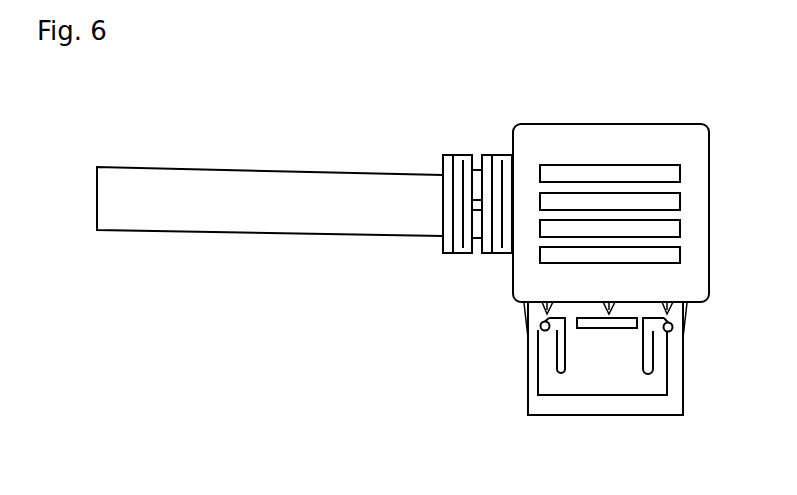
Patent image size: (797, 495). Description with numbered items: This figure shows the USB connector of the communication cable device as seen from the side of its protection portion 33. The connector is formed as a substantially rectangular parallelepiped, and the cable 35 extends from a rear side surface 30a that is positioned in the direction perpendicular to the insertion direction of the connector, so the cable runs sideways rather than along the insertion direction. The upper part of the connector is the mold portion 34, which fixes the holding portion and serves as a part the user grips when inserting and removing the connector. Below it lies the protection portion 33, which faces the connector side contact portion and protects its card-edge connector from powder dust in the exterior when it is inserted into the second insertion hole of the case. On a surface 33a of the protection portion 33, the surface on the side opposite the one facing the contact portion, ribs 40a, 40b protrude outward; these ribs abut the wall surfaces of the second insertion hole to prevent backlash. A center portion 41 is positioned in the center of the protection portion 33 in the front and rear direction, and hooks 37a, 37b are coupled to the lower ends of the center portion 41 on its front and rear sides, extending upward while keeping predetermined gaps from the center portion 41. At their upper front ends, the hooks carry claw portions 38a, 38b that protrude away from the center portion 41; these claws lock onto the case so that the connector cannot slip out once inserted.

The rear side surface 30a is at (512, 146).
The protection portion 33 is at (553, 396).
The surface of the protection portion 33a is at (647, 387).
The mold portion 34 is at (608, 150).
The cable 35 is at (284, 197).
The hook 37a is at (556, 355).
The hook 37b is at (654, 358).
The claw portion 38a is at (540, 326).
The claw portion 38b is at (673, 329).
The rib 40a is at (588, 328).
The rib 40b is at (612, 311).
The center portion 41 is at (607, 360).